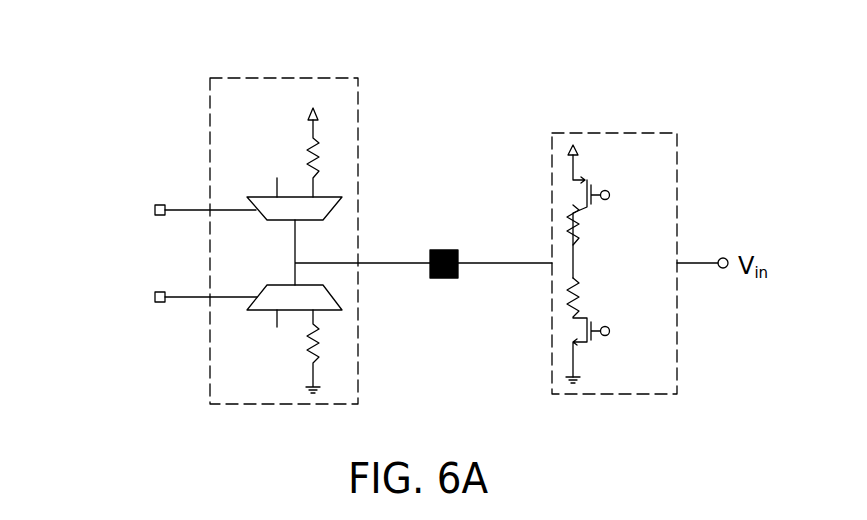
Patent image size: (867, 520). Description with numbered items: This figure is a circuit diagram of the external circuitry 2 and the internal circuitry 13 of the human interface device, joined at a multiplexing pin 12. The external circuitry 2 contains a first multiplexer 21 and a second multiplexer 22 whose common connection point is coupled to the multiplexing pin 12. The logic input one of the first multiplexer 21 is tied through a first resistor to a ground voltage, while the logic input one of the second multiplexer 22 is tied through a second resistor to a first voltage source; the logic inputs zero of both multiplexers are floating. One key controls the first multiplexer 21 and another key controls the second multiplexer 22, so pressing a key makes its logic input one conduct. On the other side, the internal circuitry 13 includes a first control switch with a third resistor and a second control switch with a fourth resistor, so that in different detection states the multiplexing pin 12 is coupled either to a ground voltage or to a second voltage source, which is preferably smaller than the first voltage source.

The external circuitry 2 is at (324, 77).
The first multiplexer 21 is at (339, 301).
The second multiplexer 22 is at (338, 203).
The multiplexing pin 12 is at (458, 257).
The internal circuitry 13 is at (677, 187).